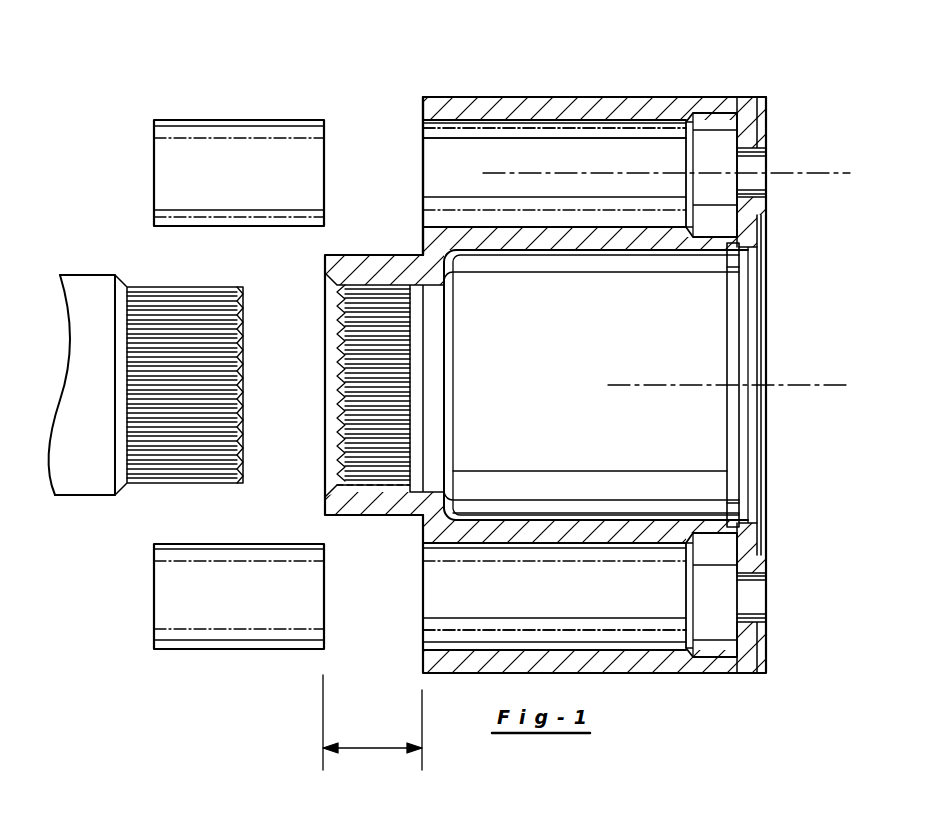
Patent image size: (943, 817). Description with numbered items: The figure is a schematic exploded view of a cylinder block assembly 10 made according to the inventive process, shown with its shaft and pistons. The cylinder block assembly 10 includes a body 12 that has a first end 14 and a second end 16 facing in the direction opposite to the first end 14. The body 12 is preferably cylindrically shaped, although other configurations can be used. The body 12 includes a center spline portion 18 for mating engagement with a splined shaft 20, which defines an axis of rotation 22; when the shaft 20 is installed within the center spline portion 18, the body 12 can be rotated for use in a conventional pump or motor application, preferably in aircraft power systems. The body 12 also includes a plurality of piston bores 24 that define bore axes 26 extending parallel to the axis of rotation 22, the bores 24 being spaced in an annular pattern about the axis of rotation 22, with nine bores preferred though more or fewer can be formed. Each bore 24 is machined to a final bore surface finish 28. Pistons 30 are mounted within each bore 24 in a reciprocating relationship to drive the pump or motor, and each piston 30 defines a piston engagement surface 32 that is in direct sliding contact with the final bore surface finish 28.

The cylinder block assembly 10 is at (797, 70).
The body 12 is at (523, 97).
The first end 14 is at (766, 117).
The second end 16 is at (423, 108).
The center spline portion 18 is at (348, 480).
The splined shaft 20 is at (100, 300).
The axis of rotation 22 is at (647, 385).
The piston bore 24 is at (645, 153).
The bore axis 26 is at (520, 172).
The final bore surface finish 28 is at (583, 117).
The piston 30 is at (181, 157).
The piston engagement surface 32 is at (240, 120).